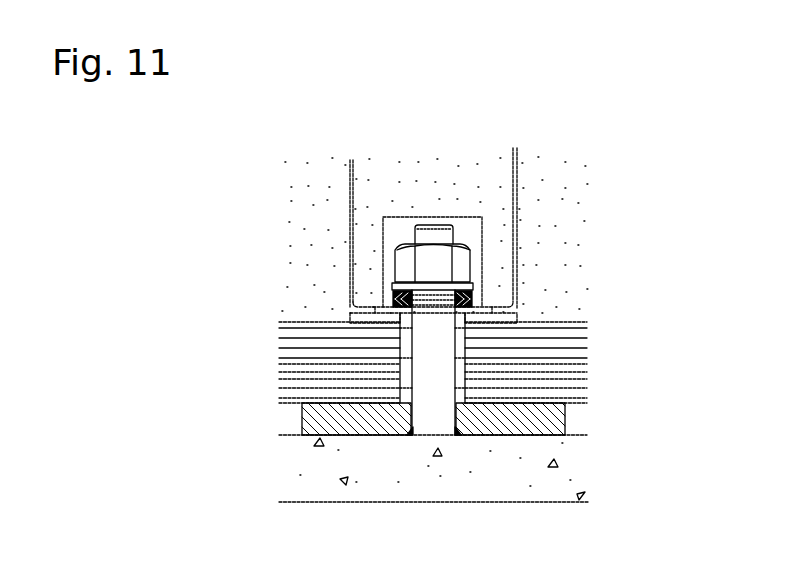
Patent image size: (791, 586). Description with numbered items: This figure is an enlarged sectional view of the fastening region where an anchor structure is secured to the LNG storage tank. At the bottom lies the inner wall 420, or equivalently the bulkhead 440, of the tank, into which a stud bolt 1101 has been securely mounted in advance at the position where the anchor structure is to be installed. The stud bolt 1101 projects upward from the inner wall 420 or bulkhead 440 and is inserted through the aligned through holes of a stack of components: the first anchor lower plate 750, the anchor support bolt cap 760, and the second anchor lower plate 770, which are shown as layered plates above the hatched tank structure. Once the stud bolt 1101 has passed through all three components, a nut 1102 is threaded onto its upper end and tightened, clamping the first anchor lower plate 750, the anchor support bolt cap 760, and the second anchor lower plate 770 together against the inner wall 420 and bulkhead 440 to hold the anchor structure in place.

The stud bolt 1101 is at (430, 226).
The nut 1102 is at (466, 262).
The first anchor lower plate 750 is at (558, 343).
The anchor support bolt cap 760 is at (565, 368).
The second anchor lower plate 770 is at (567, 385).
The inner wall 420 is at (433, 483).
The bulkhead 440 is at (432, 480).